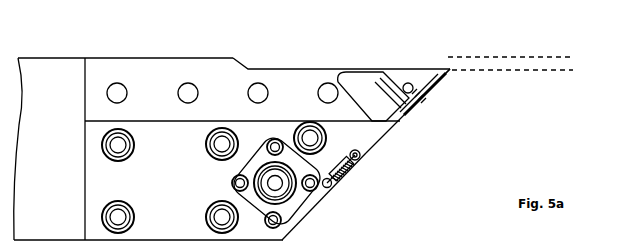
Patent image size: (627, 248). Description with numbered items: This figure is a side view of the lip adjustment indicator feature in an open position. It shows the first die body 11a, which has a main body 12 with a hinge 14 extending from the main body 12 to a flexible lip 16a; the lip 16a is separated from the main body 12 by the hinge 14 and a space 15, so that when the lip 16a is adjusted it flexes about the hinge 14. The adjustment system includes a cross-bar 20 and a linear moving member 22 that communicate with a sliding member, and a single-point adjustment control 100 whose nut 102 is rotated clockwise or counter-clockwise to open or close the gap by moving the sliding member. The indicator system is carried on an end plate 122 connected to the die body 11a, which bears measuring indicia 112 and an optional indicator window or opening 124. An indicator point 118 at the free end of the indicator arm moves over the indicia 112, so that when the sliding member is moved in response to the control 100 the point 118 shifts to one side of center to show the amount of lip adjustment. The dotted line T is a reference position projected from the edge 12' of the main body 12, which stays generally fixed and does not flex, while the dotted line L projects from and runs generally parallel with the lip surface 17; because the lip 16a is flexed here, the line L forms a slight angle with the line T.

The first die body 11a is at (405, 157).
The main body 12 is at (232, 141).
The edge of main body 12' is at (125, 49).
The hinge 14 is at (354, 68).
The space 15 is at (370, 90).
The flexible lip 16a is at (446, 72).
The lip surface 17 is at (427, 68).
The cross-bar 20 is at (408, 82).
The linear moving member 22 is at (403, 112).
The dotted reference line T is at (562, 57).
The dotted projection line L is at (553, 70).
The single-point adjustment control 100 is at (220, 175).
The nut 102 is at (242, 188).
The measuring indicia 112 is at (350, 165).
The indicator point 118 is at (326, 180).
The end plate 122 is at (283, 240).
The indicator window or opening 124 is at (341, 150).